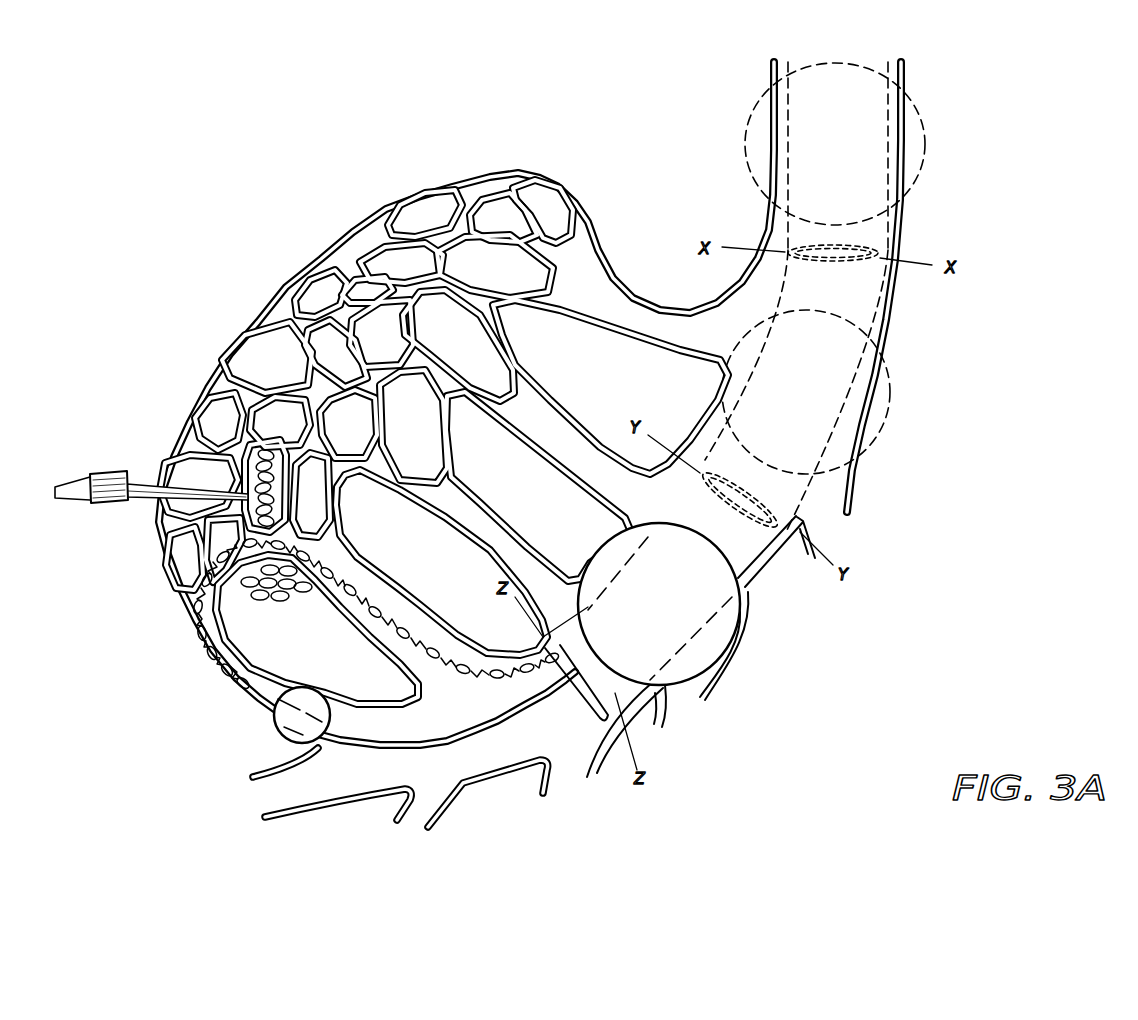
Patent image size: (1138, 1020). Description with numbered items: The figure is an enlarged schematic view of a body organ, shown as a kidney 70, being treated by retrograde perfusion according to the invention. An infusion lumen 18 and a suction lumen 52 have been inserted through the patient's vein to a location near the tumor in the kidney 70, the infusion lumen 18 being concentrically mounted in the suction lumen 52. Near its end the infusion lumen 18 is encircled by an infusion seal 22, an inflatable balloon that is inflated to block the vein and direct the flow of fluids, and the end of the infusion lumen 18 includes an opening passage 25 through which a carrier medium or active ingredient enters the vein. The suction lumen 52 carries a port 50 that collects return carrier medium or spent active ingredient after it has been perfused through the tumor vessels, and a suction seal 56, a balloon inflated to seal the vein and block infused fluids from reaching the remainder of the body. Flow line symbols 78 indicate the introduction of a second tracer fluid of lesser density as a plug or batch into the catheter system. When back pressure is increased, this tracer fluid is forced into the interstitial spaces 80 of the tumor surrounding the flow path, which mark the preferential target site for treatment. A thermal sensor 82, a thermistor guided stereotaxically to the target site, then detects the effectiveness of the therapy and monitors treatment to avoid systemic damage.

The infusion lumen 18 is at (262, 713).
The infusion seal 22 is at (288, 730).
The opening passage 25 is at (267, 693).
The port 50 is at (583, 698).
The suction lumen 52 is at (615, 693).
The suction seal 56 is at (722, 635).
The kidney 70 is at (385, 203).
The flow line symbols 78 is at (253, 453).
The interstitial spaces 80 is at (253, 477).
The thermal sensor 82 is at (118, 473).